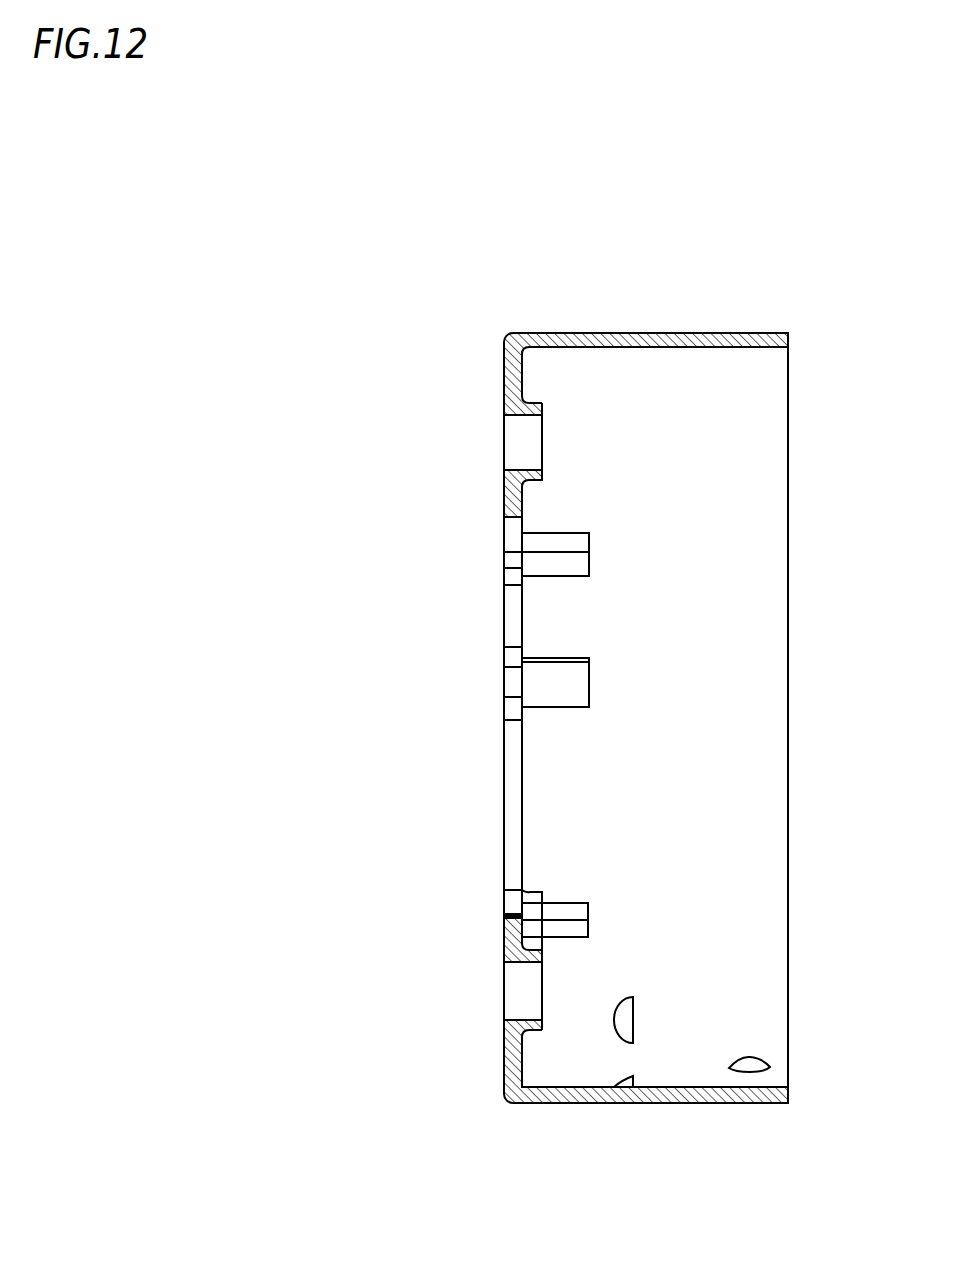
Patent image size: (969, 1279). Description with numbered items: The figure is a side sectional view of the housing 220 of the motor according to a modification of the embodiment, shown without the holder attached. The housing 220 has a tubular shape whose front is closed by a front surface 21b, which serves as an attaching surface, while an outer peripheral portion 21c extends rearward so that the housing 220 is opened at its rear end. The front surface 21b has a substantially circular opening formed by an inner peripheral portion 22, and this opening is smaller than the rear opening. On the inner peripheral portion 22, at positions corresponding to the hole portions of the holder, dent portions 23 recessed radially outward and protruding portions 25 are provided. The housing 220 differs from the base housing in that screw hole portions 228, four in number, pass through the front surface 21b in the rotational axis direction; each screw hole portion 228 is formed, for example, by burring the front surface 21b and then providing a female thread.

The housing 220 is at (284, 198).
The front surface 21b is at (504, 388).
The outer peripheral portion 21c is at (697, 335).
The screw hole portions 228 is at (517, 998).
The dent portions 23 is at (512, 577).
The protruding portions 25 is at (573, 682).
The inner peripheral portion 22 is at (512, 915).